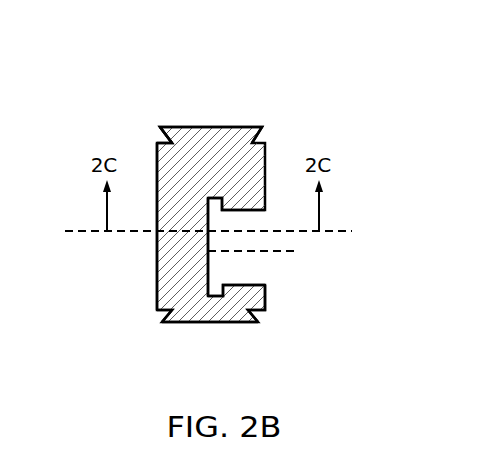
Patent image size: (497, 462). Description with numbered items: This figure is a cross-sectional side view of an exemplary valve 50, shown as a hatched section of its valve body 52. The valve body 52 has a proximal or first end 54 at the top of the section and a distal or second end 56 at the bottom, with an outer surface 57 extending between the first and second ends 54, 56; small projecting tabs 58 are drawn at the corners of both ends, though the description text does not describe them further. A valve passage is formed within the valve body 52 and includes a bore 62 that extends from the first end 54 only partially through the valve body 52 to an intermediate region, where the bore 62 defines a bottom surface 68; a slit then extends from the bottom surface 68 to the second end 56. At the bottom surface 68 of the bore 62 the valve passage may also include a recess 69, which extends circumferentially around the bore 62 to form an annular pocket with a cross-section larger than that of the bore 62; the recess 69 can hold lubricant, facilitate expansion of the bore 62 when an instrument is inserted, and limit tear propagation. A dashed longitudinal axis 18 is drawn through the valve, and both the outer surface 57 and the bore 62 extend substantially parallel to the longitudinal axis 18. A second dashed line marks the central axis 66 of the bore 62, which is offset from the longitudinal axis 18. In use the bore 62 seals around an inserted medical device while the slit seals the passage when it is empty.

The valve 50 is at (294, 92).
The valve body 52 is at (223, 127).
The first end 54 is at (265, 299).
The second end 56 is at (157, 298).
The outer surface 57 is at (209, 323).
The locating tabs 58 is at (162, 137).
The bore 62 is at (245, 284).
The central axis 66 is at (280, 251).
The bottom surface 68 is at (210, 278).
The recess 69 is at (212, 292).
The longitudinal axis 18 is at (78, 232).